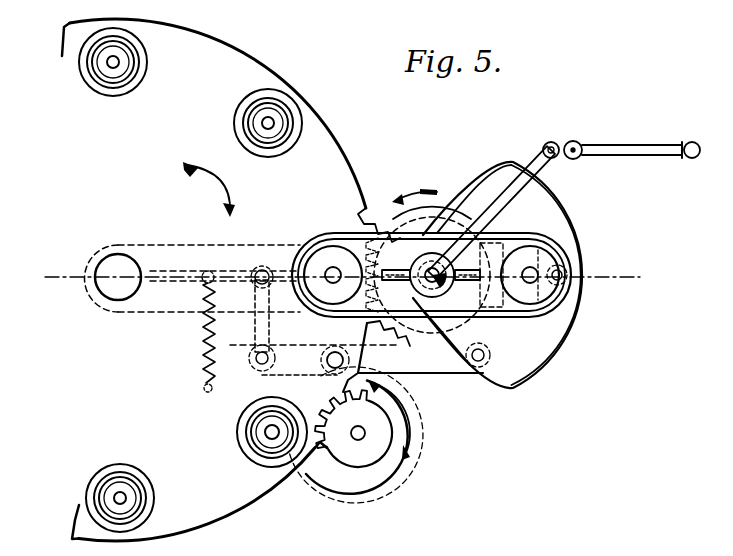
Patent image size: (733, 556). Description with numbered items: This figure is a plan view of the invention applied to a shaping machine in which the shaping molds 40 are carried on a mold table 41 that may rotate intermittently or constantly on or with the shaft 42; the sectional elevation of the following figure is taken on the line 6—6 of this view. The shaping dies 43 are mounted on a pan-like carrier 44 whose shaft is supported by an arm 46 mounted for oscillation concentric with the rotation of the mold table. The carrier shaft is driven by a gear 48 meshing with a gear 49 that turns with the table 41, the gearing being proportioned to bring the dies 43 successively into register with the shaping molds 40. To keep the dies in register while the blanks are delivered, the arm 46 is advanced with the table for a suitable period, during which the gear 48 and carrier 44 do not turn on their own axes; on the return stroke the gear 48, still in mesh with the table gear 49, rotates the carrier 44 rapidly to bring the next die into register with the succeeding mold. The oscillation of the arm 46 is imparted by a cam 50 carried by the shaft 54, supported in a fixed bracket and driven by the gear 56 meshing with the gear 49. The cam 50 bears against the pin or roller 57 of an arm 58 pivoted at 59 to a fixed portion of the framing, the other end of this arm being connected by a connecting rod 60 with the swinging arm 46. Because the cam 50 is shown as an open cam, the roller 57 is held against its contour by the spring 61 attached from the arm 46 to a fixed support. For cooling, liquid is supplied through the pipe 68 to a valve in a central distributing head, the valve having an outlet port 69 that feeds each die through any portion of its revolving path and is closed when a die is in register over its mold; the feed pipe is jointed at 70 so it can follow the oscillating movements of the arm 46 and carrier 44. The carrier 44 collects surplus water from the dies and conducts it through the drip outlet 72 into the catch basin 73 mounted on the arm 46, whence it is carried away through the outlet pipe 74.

The section line 6— 6 is at (339, 277).
The shaping molds 40 is at (238, 108).
The mold table 41 is at (330, 170).
The shaft 42 is at (118, 262).
The shaping dies 43 is at (326, 262).
The carrier 44 is at (548, 238).
The arm 46 is at (248, 245).
The gear 48 is at (446, 205).
The gear 49 is at (362, 222).
The cam 50 is at (402, 468).
The shaft 54 is at (362, 440).
The gear 56 is at (342, 470).
The pin or roller 57 is at (342, 350).
The arm 58 is at (280, 375).
The pivot 59 is at (480, 362).
The connecting rod 60 is at (257, 327).
The spring 61 is at (203, 347).
The pipe 68 is at (502, 204).
The outlet port 69 is at (446, 283).
The joint 70 is at (553, 143).
The drip outlet 72 is at (410, 283).
The catch basin 73 is at (548, 207).
The outlet pipe 74 is at (565, 283).